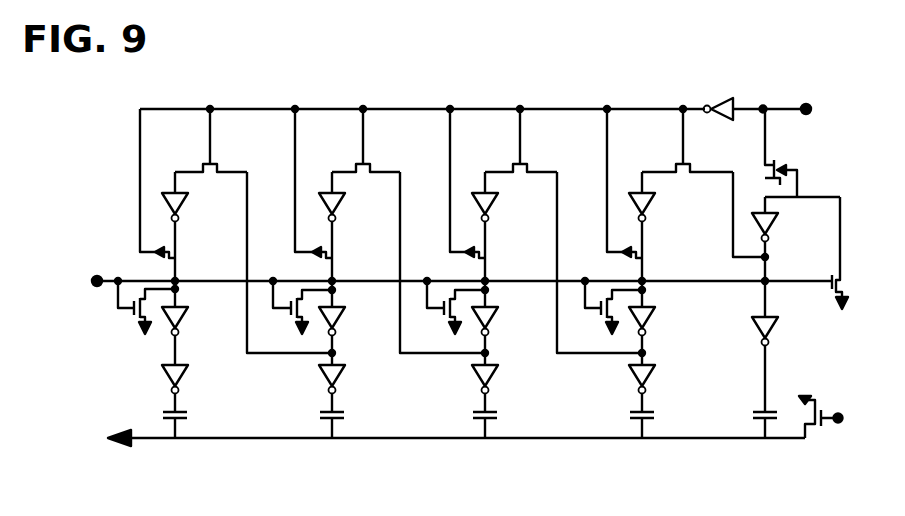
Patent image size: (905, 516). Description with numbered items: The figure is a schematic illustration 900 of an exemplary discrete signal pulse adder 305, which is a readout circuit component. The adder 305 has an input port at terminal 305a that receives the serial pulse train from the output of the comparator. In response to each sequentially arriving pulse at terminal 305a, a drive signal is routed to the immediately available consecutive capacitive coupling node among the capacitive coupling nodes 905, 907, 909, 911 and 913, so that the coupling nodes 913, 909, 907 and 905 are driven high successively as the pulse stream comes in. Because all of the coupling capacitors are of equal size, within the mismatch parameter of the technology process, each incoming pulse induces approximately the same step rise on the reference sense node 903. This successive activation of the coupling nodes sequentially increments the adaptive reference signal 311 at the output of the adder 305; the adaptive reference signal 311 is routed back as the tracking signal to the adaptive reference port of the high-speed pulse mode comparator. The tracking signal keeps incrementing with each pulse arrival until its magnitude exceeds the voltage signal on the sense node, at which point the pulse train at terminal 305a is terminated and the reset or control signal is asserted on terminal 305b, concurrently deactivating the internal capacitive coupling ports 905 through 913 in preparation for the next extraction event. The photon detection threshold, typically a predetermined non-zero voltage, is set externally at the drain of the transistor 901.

The schematic illustration 900 is at (62, 93).
The discrete signal pulse adder 305 is at (770, 55).
The input terminal for serial pulse train 305a is at (810, 105).
The reset terminal 305b is at (93, 278).
The adaptive reference signal 311 is at (115, 433).
The capacitive coupling node 905 is at (205, 413).
The capacitive coupling node 907 is at (352, 413).
The capacitive coupling node 909 is at (507, 413).
The capacitive coupling node 911 is at (658, 413).
The capacitive coupling node 913 is at (757, 410).
The reference sense node 903 is at (488, 441).
The transistor 901 is at (826, 414).